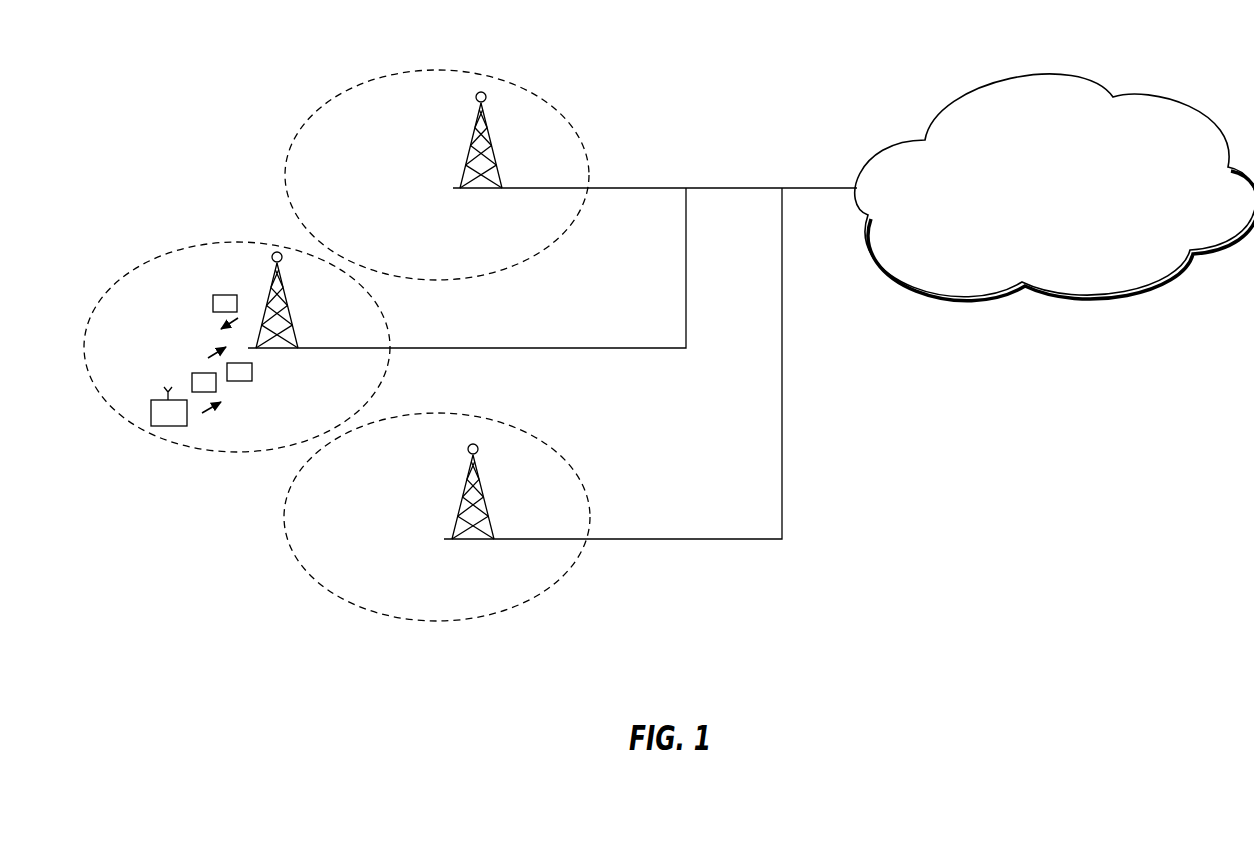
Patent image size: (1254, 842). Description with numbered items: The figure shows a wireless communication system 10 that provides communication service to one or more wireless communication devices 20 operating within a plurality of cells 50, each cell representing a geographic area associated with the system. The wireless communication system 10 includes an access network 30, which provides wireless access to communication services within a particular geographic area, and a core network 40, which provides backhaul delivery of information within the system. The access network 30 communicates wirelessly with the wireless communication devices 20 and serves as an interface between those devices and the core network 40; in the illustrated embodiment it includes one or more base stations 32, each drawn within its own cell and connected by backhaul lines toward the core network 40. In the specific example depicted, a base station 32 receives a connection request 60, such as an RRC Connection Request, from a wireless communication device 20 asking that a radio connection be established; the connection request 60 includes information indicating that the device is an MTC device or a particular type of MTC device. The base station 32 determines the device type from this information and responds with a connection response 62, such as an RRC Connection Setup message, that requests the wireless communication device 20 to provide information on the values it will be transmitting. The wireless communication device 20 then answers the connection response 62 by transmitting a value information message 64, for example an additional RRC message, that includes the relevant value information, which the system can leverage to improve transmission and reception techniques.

The wireless communication system 10 is at (772, 38).
The wireless communication device 20 is at (163, 398).
The access network 30 is at (208, 48).
The base station 32 is at (470, 143).
The core network 40 is at (1190, 108).
The cell 50 is at (352, 88).
The connection request 60 is at (240, 381).
The connection response 62 is at (225, 295).
The value information message 64 is at (205, 373).